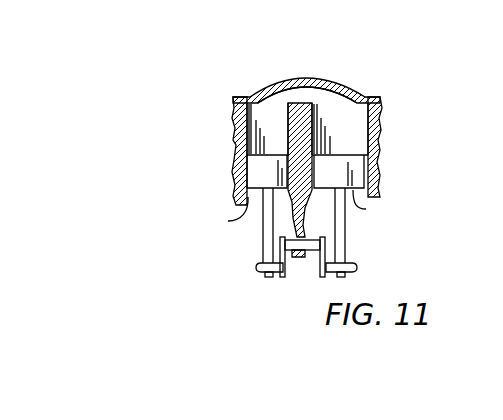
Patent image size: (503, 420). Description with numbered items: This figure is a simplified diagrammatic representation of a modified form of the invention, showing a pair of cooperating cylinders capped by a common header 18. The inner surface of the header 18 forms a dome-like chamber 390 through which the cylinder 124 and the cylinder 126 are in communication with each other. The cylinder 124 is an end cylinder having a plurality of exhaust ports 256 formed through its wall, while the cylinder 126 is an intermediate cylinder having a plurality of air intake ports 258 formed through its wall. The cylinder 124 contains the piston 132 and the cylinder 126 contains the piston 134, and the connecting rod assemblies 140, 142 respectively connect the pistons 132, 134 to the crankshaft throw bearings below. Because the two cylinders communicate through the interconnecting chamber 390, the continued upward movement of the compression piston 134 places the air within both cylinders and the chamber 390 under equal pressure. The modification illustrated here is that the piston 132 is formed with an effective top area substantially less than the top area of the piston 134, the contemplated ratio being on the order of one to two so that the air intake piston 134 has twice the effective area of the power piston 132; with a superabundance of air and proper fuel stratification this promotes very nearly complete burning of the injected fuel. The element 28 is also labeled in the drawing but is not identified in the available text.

The header 18 is at (268, 85).
The dome-like chamber 390 is at (307, 93).
The cylinder 124 is at (270, 120).
The cylinder 126 is at (353, 123).
The exhaust ports 256 is at (234, 147).
The air intake ports 258 is at (378, 148).
The piston 132 is at (228, 221).
The piston 134 is at (366, 209).
The connecting rod assembly 140 is at (260, 231).
The connecting rod assembly 142 is at (352, 235).
The bracket 28 is at (279, 284).